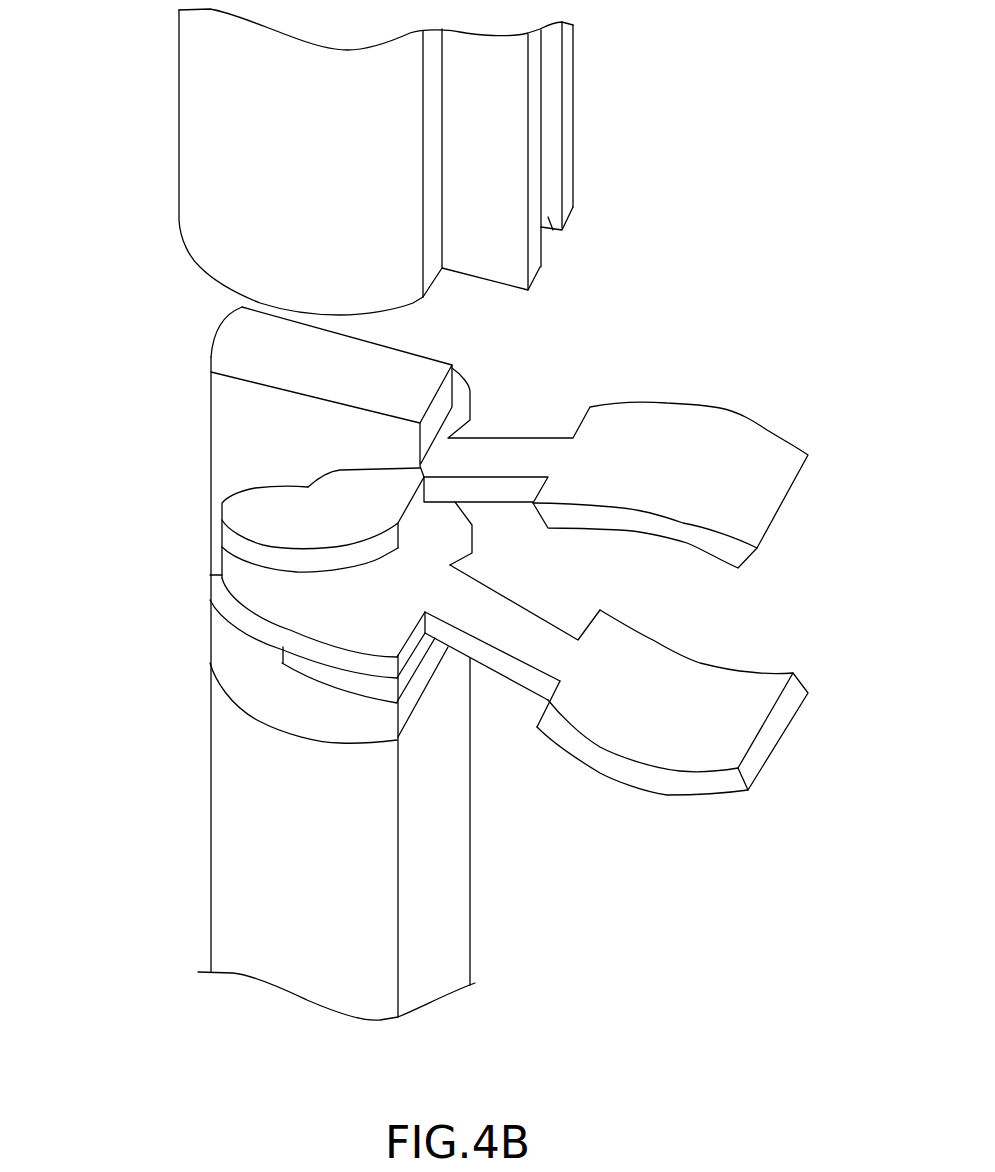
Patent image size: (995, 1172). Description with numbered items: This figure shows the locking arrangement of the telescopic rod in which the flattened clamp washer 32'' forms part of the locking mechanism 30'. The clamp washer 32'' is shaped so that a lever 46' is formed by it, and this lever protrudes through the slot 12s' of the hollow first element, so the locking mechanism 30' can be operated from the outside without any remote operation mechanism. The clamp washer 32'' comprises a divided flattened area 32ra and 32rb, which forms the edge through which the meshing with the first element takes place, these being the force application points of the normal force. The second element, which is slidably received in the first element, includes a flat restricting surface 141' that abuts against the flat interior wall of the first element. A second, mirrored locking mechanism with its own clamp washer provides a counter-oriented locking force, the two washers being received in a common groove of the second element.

The slot 12s' is at (423, 162).
The flattened area 32rb is at (470, 562).
The flattened area 32ra is at (405, 653).
The lever 46' is at (701, 719).
The clamp washer 32'' is at (251, 659).
The locking mechanism 30' is at (257, 648).
The flat restricting surface 141' is at (383, 688).